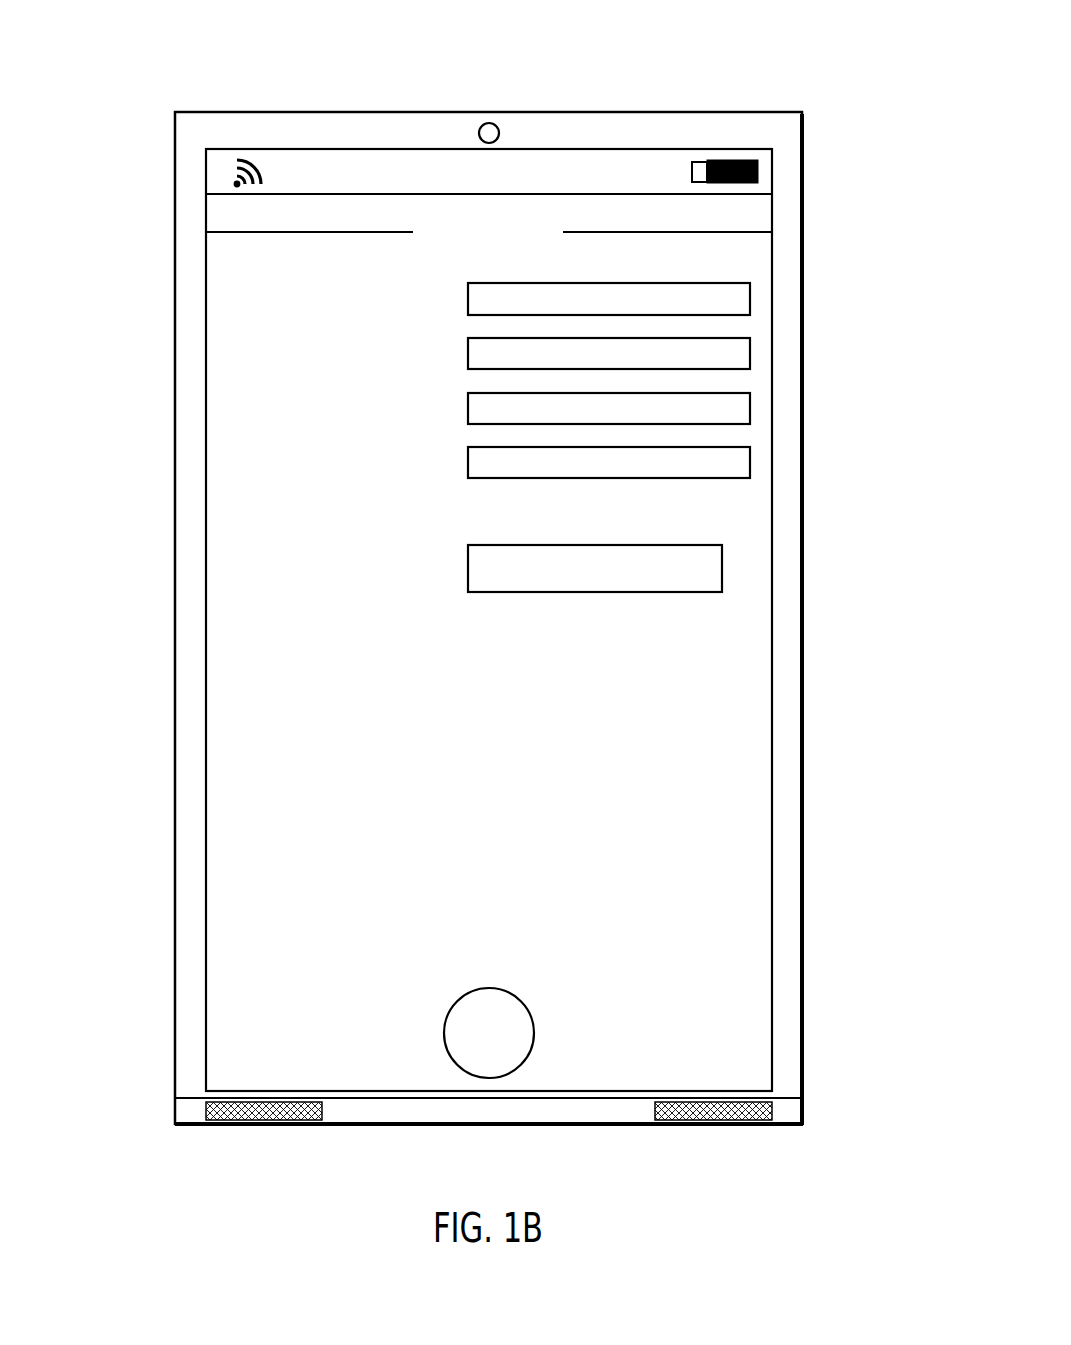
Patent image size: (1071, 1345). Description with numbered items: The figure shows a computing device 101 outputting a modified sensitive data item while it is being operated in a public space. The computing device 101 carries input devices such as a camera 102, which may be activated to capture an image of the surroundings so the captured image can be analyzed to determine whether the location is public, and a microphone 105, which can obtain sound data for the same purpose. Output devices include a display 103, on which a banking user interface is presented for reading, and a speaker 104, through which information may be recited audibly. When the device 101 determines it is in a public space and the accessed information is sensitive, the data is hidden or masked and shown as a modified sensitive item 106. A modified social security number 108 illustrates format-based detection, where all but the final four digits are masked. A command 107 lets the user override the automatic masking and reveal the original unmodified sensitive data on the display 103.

The computing device 101 is at (280, 112).
The camera 102 is at (493, 125).
The display 103 is at (206, 640).
The speaker 104 is at (717, 1121).
The microphone 105 is at (282, 1195).
The modified sensitive item 106 is at (677, 283).
The command 107 is at (684, 545).
The modified social security number 108 is at (750, 357).